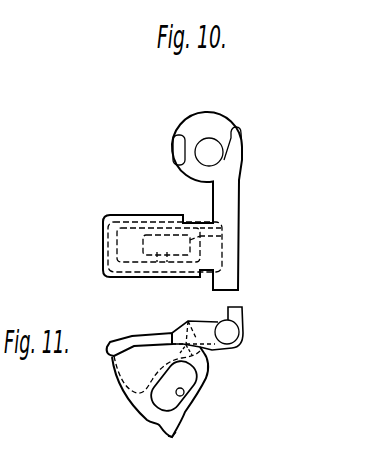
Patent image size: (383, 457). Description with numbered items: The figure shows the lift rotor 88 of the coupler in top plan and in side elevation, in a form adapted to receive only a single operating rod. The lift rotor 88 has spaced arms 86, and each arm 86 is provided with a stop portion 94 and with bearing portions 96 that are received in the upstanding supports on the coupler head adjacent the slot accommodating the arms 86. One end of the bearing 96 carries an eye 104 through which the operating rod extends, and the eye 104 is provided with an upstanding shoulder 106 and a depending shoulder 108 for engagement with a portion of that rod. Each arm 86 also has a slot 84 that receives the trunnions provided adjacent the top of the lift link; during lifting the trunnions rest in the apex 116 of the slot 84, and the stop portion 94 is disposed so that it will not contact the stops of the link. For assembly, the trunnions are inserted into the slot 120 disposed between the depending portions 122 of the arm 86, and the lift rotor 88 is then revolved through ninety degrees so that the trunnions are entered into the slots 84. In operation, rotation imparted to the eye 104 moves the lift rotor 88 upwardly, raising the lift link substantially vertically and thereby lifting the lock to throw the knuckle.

In FIG. 11, the slot 84 is at (183, 395).
In FIG. 10, the arm 86 is at (150, 280).
In FIG. 11, the arm 86 is at (132, 378).
In FIG. 11, the lift rotor 88 is at (142, 336).
In FIG. 11, the stop portion 94 is at (172, 437).
In FIG. 10, the bearing portion 96 is at (232, 190).
In FIG. 10, the eye 104 is at (190, 123).
In FIG. 10, the upstanding shoulder 106 is at (243, 138).
In FIG. 11, the upstanding shoulder 106 is at (243, 313).
In FIG. 10, the depending shoulder 108 is at (172, 140).
In FIG. 11, the depending shoulder 108 is at (183, 353).
In FIG. 11, the apex 116 is at (155, 402).
In FIG. 10, the slot 120 is at (187, 240).
In FIG. 10, the depending portion 122 is at (207, 215).